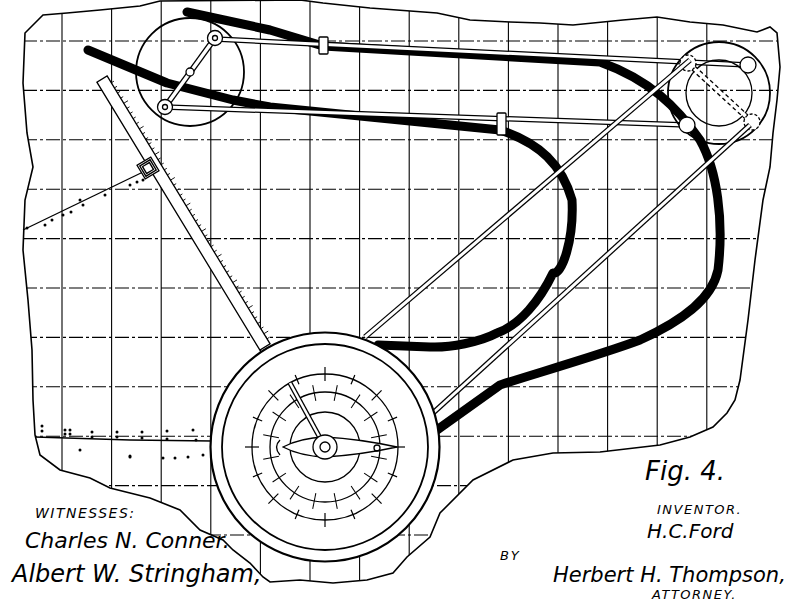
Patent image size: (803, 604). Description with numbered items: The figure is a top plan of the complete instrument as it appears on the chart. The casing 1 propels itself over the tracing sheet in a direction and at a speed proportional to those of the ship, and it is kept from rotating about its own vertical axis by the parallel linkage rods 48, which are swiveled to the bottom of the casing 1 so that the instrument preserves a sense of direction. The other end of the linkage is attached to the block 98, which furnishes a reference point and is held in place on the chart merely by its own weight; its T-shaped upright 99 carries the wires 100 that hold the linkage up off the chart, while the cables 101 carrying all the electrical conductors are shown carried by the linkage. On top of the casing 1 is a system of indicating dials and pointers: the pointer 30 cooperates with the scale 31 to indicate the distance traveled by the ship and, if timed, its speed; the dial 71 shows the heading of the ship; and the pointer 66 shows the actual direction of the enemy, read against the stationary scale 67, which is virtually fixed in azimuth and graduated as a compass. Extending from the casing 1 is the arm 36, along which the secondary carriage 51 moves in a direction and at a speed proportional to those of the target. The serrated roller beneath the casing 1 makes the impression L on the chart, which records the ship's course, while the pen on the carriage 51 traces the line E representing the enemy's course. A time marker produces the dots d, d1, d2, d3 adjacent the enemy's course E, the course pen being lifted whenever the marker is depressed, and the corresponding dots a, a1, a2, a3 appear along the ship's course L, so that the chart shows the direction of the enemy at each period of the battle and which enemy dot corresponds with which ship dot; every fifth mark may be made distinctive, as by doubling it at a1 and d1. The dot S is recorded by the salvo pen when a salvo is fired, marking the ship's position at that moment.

The casing 1 is at (413, 460).
The pointer 30 is at (325, 447).
The scale 31 is at (342, 486).
The arm 36 is at (191, 216).
The rods 48 is at (536, 117).
The carriage 51 is at (160, 168).
The pointer 66 is at (298, 398).
The stationary scale 67 is at (388, 428).
The dial 71 is at (278, 440).
The block 98 is at (190, 72).
The T-shaped upright 99 is at (207, 58).
The wires 100 is at (482, 33).
The cables 101 is at (663, 323).
The dot a is at (43, 422).
The dot a1 is at (68, 425).
The dot a2 is at (92, 425).
The dot a3 is at (113, 427).
The dot d is at (45, 224).
The dot d1 is at (83, 200).
The dot d2 is at (81, 198).
The dot d3 is at (100, 203).
The line E is at (134, 164).
The impression L is at (138, 447).
The dot S is at (163, 458).